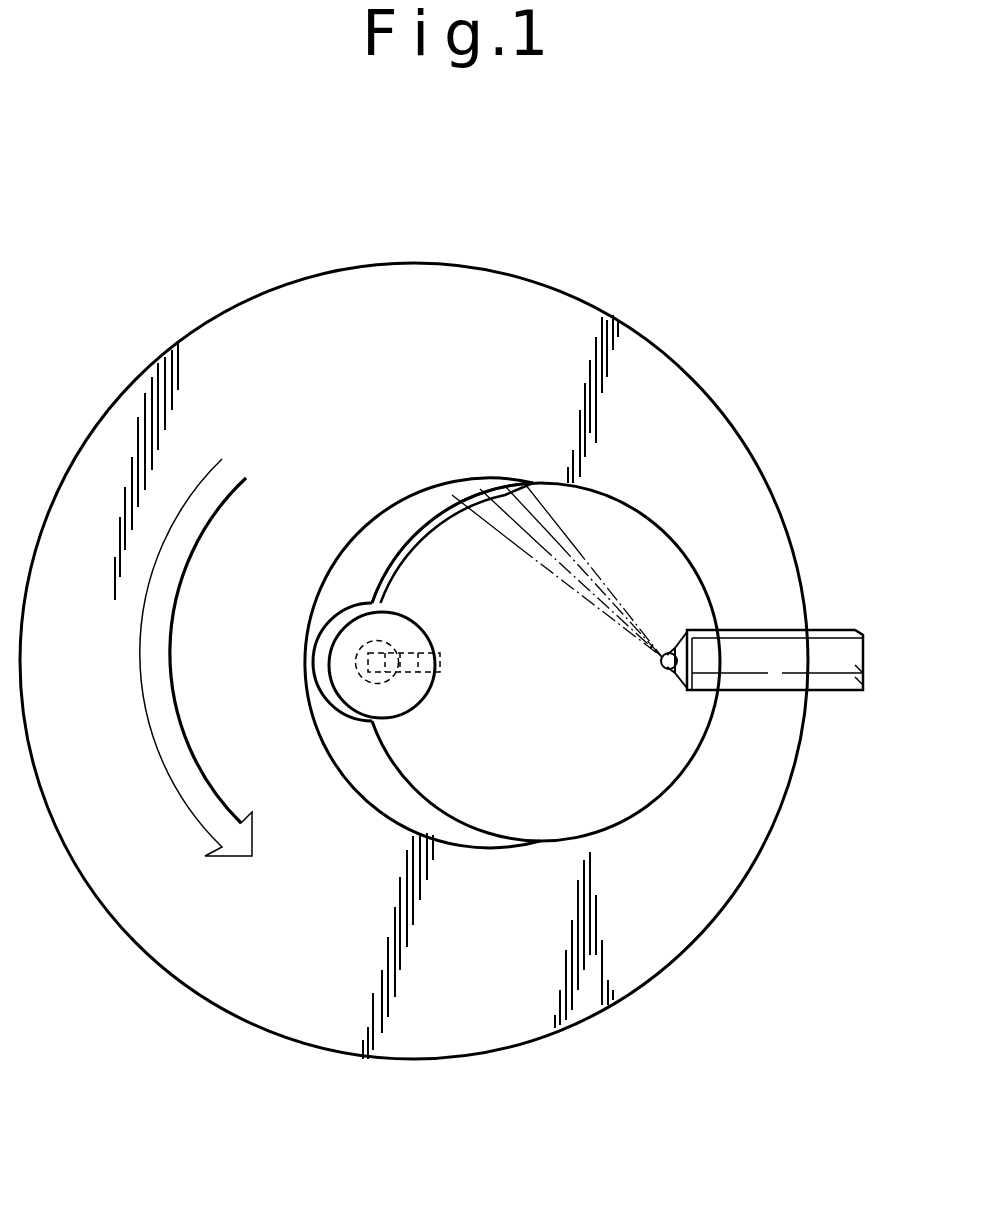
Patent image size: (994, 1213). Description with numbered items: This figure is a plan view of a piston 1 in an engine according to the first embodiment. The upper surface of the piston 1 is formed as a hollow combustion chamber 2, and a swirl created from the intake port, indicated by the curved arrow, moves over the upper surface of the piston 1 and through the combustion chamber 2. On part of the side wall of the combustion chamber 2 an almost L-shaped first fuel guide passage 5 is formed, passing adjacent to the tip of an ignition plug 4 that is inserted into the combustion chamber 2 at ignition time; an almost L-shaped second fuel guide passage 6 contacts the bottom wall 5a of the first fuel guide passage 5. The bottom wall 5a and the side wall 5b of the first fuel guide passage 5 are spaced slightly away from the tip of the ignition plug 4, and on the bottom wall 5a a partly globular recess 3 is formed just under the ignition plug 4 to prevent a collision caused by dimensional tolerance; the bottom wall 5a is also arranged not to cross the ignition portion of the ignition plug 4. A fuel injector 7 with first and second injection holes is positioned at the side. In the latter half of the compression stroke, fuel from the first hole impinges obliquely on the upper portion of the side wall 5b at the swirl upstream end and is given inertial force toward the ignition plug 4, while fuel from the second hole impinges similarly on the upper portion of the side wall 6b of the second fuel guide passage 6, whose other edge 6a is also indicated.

The piston 1 is at (733, 858).
The combustion chamber 2 is at (670, 740).
The partly globular recess 3 is at (365, 720).
The ignition plug 4 is at (405, 702).
The first fuel guide passage 5 is at (440, 472).
The bottom wall 5a is at (362, 548).
The side wall 5b is at (410, 508).
The second fuel guide passage 6 is at (420, 549).
The outer edge of band 6a is at (394, 558).
The side wall 6b is at (396, 563).
The fuel injector 7 is at (832, 647).